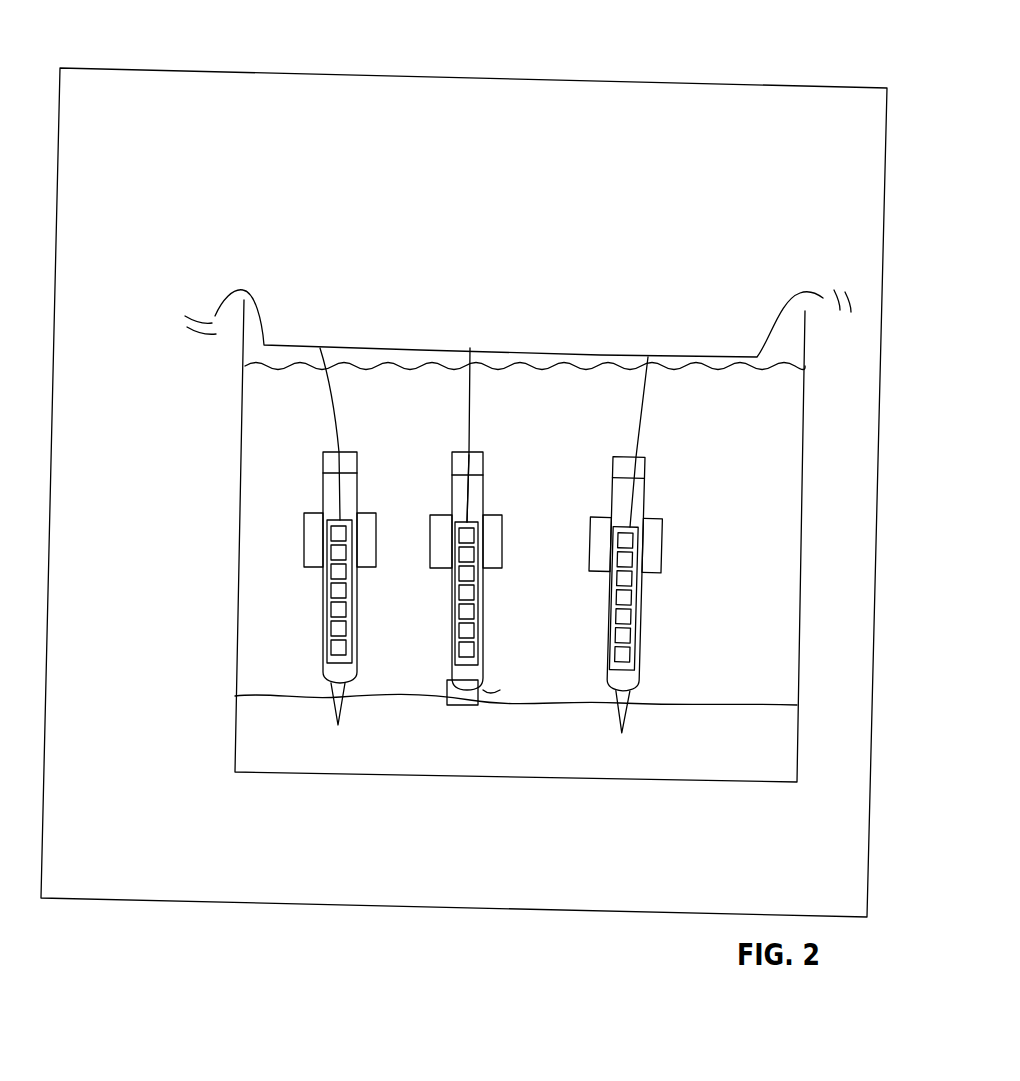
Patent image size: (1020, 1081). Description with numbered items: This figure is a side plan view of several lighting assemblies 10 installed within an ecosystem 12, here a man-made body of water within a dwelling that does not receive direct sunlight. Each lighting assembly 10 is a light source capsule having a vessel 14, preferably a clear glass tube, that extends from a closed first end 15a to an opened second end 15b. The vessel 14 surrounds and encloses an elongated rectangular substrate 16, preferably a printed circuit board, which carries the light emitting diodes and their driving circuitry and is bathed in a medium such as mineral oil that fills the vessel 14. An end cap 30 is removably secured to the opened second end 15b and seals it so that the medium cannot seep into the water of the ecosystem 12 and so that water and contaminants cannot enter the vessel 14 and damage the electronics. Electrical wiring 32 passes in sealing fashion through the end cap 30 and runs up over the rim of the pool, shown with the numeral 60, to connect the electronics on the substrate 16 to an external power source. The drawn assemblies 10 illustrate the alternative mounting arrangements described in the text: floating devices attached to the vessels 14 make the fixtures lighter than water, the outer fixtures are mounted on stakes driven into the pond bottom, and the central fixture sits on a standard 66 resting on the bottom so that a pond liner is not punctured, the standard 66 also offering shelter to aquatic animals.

The lighting assembly 10 is at (238, 224).
The ecosystem 12 is at (736, 52).
The vessel 14 is at (475, 545).
The closed first end 15a is at (484, 690).
The opened second end 15b is at (452, 462).
The substrate 16 is at (475, 535).
The end cap 30 is at (477, 465).
The electrical wiring 32 is at (337, 393).
The pool ledge / rim 60 is at (270, 334).
The standard 66 is at (462, 697).